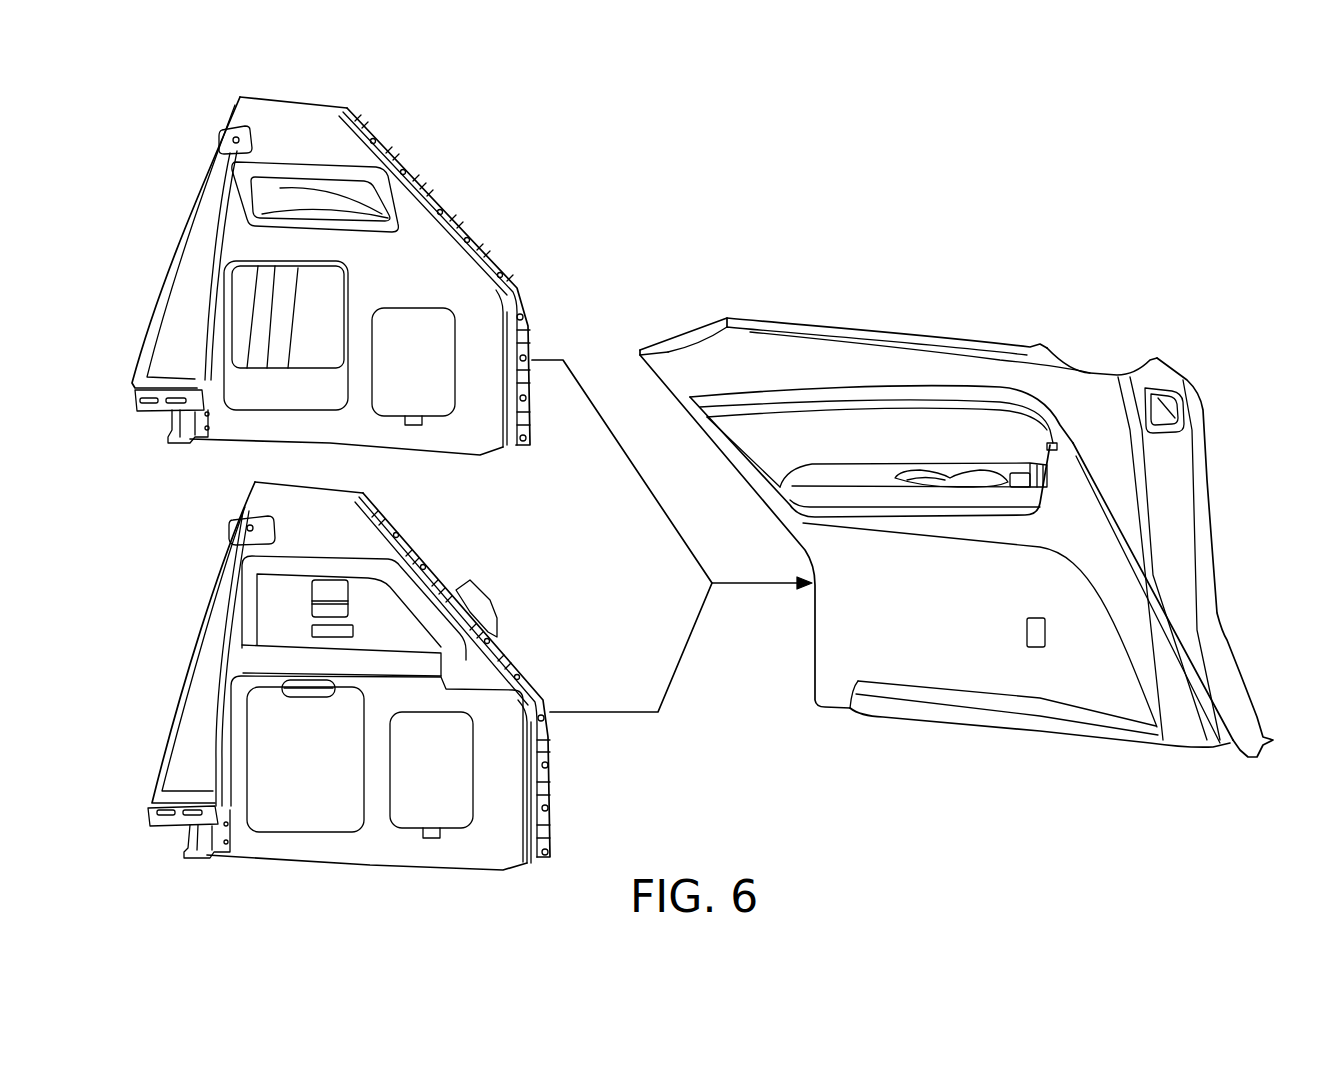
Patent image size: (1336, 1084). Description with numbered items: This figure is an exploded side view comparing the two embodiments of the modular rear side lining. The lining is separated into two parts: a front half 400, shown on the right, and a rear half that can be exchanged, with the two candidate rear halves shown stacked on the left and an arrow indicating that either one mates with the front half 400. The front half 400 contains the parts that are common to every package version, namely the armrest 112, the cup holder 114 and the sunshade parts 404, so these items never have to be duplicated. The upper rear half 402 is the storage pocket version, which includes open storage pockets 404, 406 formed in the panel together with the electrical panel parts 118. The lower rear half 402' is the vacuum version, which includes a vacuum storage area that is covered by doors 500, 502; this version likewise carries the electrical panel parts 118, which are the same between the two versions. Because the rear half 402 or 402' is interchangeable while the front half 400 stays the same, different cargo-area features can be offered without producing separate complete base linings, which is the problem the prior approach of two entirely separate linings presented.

The front half 400 is at (964, 519).
The rear half 402 is at (323, 256).
The rear half 402' is at (349, 706).
The open storage pocket 404 is at (277, 193).
The open storage pocket 406 is at (258, 317).
The electrical panel parts 118 is at (420, 335).
The armrest 112 is at (840, 497).
The cup holder 114 is at (983, 480).
The door 500 is at (285, 638).
The door 502 is at (304, 793).